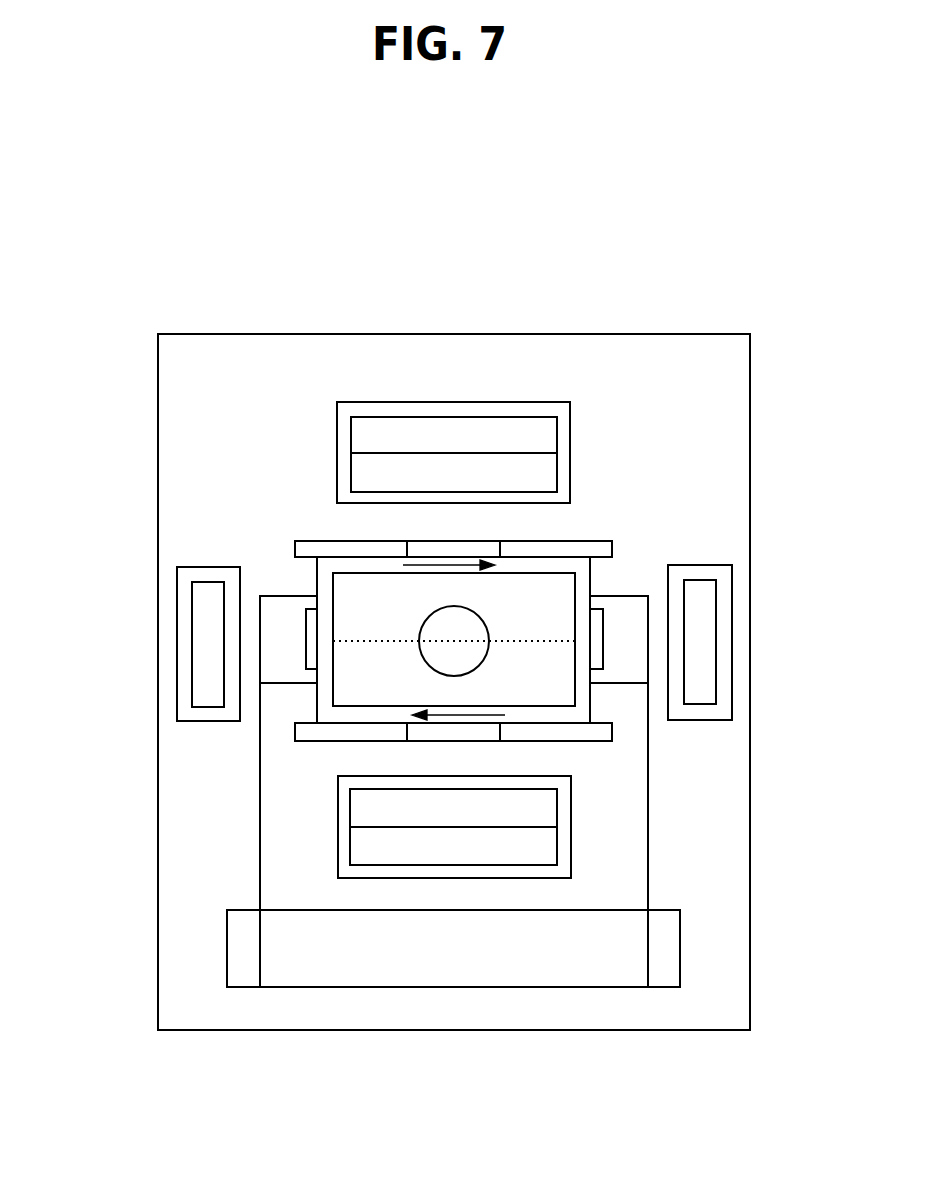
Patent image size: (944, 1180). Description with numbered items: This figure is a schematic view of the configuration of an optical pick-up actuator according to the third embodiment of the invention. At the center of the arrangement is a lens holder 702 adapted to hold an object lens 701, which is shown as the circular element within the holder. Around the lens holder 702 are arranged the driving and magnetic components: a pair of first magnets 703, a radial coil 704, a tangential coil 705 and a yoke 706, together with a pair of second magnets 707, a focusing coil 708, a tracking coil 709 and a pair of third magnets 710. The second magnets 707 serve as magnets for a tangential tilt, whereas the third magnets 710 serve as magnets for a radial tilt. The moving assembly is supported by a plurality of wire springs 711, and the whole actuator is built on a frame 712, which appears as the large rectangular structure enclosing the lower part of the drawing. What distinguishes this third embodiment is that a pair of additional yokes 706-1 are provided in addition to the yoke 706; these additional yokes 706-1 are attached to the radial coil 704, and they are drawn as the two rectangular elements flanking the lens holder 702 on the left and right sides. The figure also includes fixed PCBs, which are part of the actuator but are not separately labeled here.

The object lens 701 is at (425, 655).
The lens holder 702 is at (357, 590).
The first magnets 703 is at (547, 472).
The radial coil 704 is at (732, 665).
The tangential coil 705 is at (337, 438).
The yoke 706 is at (553, 428).
The additional yokes 706-1 is at (198, 644).
The second magnets 707 is at (440, 543).
The focusing coil 708 is at (593, 578).
The tracking coil 709 is at (305, 542).
The third magnets 710 is at (603, 665).
The wire springs 711 is at (648, 815).
The frame 712 is at (637, 966).